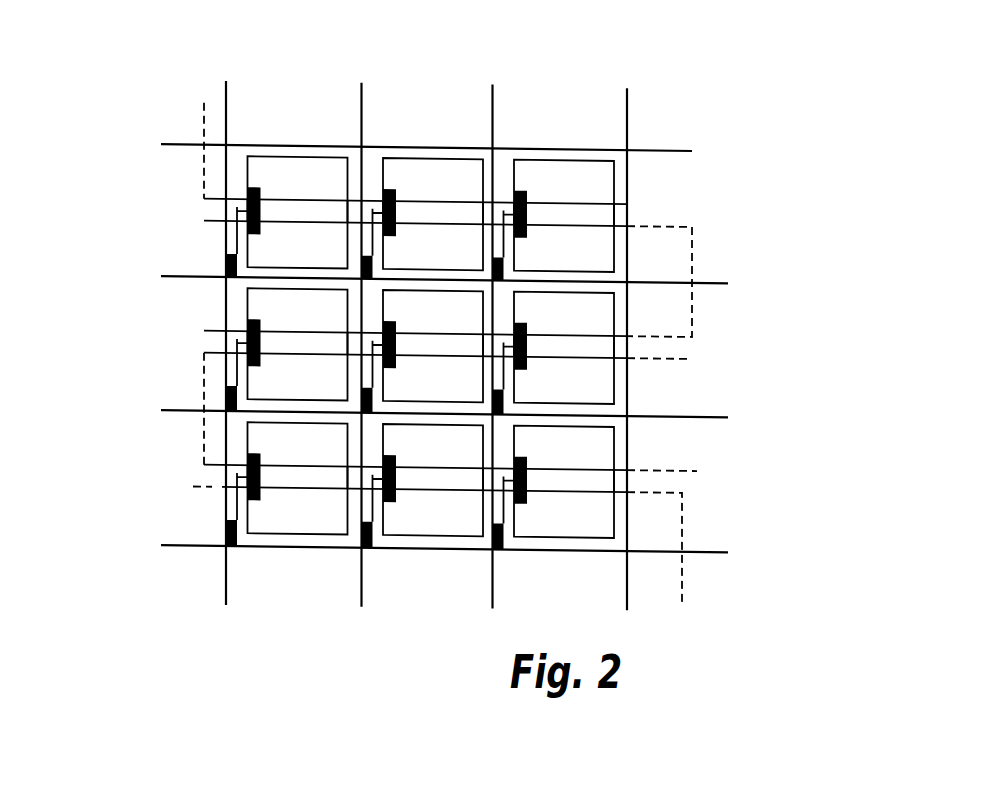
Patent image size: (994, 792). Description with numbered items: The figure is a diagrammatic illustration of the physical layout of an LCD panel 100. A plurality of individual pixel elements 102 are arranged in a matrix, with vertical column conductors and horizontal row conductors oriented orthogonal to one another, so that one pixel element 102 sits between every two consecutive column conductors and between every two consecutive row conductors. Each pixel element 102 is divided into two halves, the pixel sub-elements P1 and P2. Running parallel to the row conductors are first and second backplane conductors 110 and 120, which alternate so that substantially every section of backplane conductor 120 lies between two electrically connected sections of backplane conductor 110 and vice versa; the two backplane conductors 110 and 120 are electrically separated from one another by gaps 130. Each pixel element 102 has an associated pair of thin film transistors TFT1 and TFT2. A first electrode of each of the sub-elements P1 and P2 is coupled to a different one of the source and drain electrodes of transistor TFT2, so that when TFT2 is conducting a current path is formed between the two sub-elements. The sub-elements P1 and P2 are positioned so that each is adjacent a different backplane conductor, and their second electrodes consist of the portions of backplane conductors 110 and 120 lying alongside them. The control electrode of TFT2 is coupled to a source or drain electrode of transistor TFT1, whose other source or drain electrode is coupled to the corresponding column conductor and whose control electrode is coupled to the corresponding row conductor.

The LCD panel 100 is at (132, 72).
The pixel element 102 is at (570, 133).
The first backplane conductor 110 is at (665, 304).
The second backplane conductor 120 is at (215, 162).
The gap 130 is at (666, 351).
The thin film transistor TFT1 is at (514, 262).
The thin film transistor TFT2 is at (530, 190).
The pixel sub-element P1 is at (600, 252).
The pixel sub-element P2 is at (597, 188).